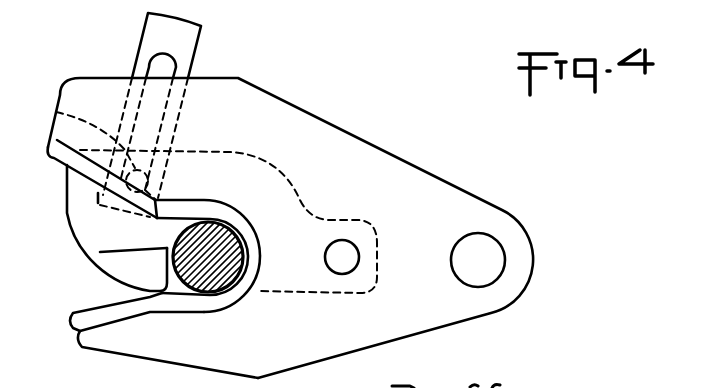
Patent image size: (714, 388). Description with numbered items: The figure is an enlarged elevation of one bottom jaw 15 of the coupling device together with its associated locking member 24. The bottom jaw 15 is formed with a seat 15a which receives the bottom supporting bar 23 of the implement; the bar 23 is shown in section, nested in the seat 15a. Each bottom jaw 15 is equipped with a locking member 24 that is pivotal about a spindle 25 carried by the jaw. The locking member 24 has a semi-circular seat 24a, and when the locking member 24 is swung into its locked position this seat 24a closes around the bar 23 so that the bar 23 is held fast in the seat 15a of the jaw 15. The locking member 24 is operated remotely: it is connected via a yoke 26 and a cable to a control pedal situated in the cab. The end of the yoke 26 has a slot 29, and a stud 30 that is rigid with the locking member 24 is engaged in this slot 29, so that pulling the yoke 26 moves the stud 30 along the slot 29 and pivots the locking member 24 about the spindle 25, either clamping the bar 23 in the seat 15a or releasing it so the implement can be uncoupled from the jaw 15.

The bottom jaw 15 is at (355, 146).
The seat 15a is at (203, 222).
The bottom supporting bar 23 is at (203, 282).
The locking member 24 is at (70, 219).
The semi-circular seat 24a is at (100, 252).
The spindle 25 is at (347, 255).
The yoke 26 is at (157, 37).
The slot 29 is at (168, 66).
The stud 30 is at (56, 109).